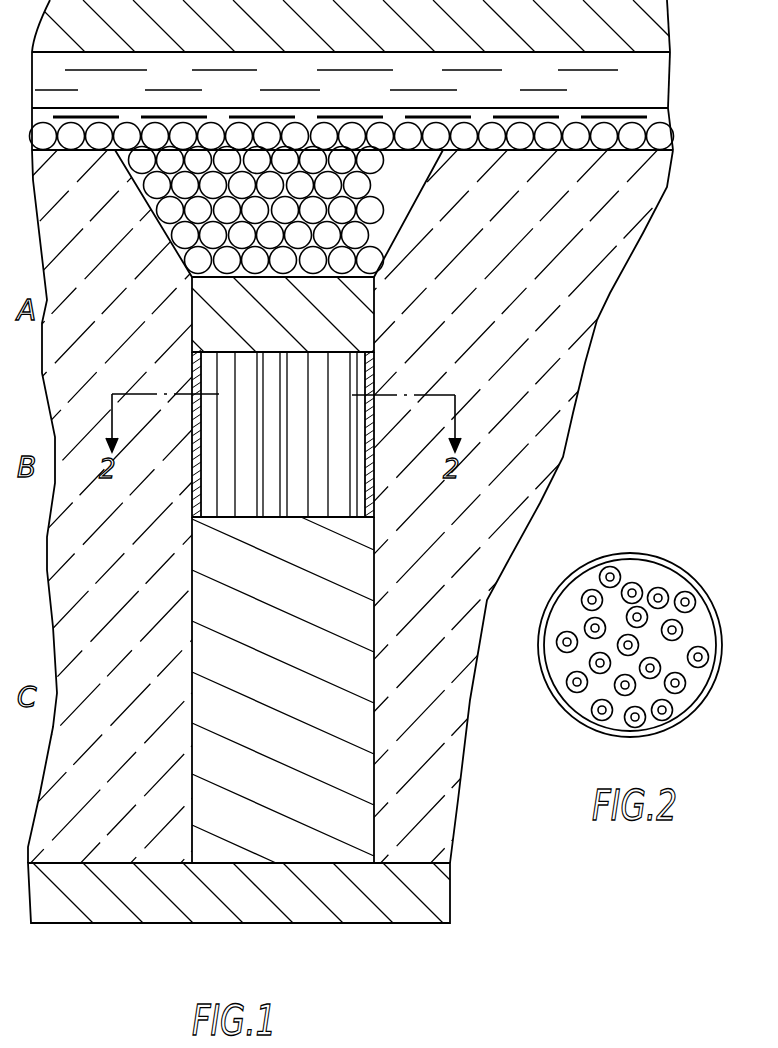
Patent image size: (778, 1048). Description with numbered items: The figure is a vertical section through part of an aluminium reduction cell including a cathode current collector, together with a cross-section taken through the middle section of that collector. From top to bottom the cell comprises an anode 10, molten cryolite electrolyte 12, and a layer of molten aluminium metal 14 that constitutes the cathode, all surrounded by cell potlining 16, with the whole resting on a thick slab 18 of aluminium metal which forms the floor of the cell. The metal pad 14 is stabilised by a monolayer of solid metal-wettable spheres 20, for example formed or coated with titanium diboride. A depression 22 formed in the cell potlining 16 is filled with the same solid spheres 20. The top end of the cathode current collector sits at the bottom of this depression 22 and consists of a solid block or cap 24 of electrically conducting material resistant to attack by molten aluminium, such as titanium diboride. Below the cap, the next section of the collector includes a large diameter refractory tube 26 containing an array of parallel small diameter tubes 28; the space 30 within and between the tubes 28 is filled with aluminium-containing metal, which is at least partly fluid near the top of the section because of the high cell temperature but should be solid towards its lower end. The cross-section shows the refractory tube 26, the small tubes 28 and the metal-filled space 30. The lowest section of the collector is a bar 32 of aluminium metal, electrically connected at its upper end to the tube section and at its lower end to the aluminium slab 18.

In FIG. 1, the anode 10 is at (648, 32).
In FIG. 1, the molten cryolite electrolyte 12 is at (640, 90).
In FIG. 1, the layer of molten aluminium metal 14 is at (645, 118).
In FIG. 1, the cell potlining 16 is at (575, 286).
In FIG. 1, the slab of aluminium metal 18 is at (385, 890).
In FIG. 1, the solid metal-wettable spheres 20 is at (405, 187).
In FIG. 1, the depression 22 is at (397, 232).
In FIG. 1, the block or cap 24 is at (355, 316).
In FIG. 1, the large diameter refractory tube 26 is at (367, 447).
In FIG. 2, the large diameter refractory tube 26 is at (667, 730).
In FIG. 1, the small diameter tubes 28 is at (335, 507).
In FIG. 2, the small diameter tubes 28 is at (687, 602).
In FIG. 1, the space within and between the tubes 30 is at (318, 508).
In FIG. 2, the space within and between the tubes 30 is at (655, 575).
In FIG. 1, the bar of aluminium metal 32 is at (337, 697).